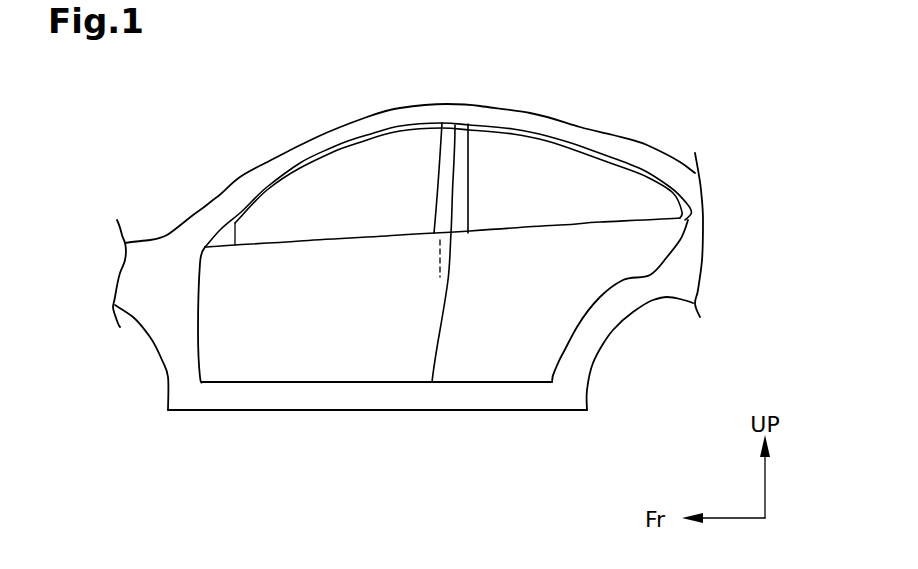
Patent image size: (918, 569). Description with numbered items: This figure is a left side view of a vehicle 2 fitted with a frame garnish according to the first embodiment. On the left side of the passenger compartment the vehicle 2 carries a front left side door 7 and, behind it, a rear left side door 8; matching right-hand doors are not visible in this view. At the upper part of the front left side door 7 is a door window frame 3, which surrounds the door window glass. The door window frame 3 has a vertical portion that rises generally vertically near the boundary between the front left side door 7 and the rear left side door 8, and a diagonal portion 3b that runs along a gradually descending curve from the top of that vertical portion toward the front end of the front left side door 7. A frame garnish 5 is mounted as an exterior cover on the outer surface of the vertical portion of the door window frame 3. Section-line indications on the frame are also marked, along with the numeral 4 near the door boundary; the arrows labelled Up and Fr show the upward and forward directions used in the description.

The vehicle 2 is at (653, 98).
The door window frame 3 is at (437, 105).
The diagonal portion 3b is at (225, 205).
The center pillar 4 is at (442, 231).
The frame garnish 5 is at (458, 217).
The front left side door 7 is at (293, 343).
The rear left side door 8 is at (500, 343).